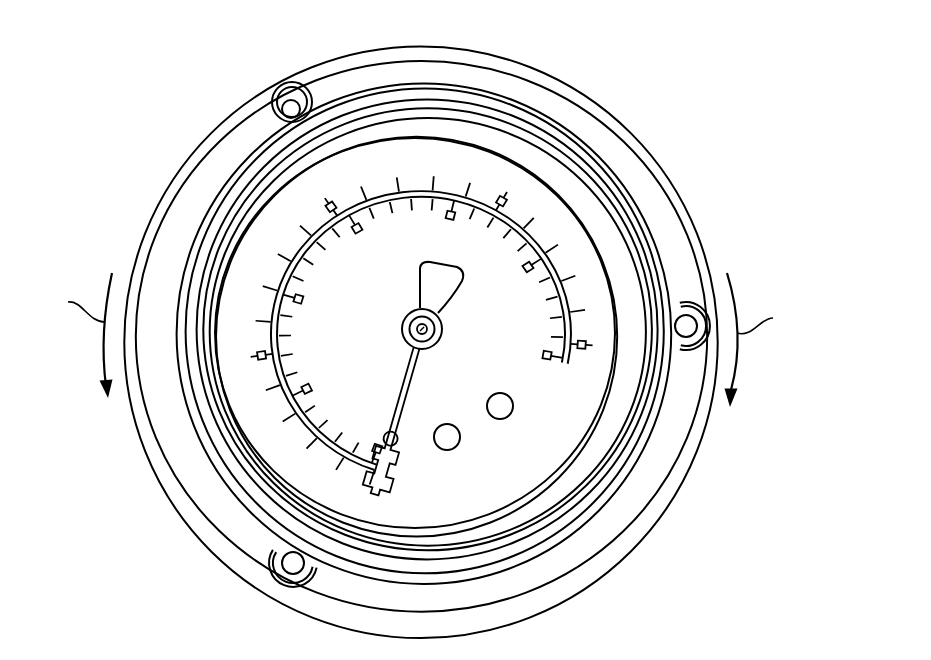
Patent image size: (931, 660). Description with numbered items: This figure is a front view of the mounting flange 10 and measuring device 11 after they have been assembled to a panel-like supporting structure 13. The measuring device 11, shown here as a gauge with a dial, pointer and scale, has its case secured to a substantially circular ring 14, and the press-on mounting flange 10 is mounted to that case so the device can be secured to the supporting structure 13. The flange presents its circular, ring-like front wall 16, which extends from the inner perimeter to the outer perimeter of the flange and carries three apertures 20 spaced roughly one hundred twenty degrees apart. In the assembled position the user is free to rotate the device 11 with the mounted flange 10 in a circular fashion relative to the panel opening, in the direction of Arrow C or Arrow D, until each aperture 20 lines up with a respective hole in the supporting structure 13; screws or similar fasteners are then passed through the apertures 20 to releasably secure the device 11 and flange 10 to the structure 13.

The mounting flange 10 is at (462, 52).
The measuring device 11 is at (545, 232).
The supporting structure 13 is at (115, 70).
The ring 14 is at (372, 92).
The front wall 16 is at (212, 170).
The aperture 20 is at (288, 96).